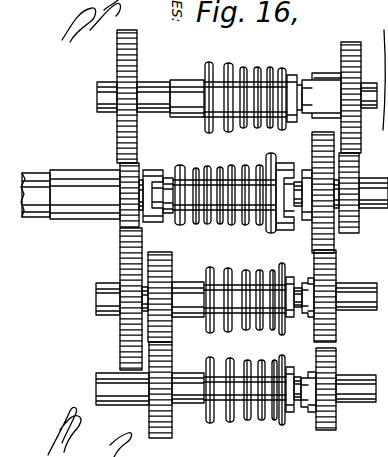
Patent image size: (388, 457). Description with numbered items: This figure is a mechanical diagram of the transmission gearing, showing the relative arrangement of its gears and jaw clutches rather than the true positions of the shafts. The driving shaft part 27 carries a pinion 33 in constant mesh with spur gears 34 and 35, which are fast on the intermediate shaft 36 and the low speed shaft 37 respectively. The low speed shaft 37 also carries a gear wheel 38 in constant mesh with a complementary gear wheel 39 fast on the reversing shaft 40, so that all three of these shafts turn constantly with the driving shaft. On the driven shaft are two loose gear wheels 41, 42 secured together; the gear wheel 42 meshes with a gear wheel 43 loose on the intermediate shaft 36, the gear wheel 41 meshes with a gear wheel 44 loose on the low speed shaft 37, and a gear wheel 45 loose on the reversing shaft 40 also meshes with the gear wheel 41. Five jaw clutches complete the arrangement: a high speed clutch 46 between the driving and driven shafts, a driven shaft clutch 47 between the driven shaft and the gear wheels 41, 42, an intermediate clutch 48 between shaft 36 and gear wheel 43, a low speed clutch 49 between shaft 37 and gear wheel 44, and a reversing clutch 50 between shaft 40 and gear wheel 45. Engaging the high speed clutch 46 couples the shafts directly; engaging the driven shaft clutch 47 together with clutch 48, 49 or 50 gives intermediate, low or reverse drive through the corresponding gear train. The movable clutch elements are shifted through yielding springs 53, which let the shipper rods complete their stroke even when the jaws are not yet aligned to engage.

The driving shaft part 27 is at (204, 185).
The pinion 33 is at (121, 220).
The spur gear 34 is at (117, 47).
The spur gear 35 is at (120, 330).
The intermediate shaft 36 is at (148, 88).
The low speed shaft 37 is at (100, 298).
The gear wheel 38 is at (166, 255).
The complementary gear wheel 39 is at (171, 436).
The reversing shaft 40 is at (108, 406).
The gear wheel 41 is at (331, 242).
The gear wheel 42 is at (353, 216).
The gear wheel 43 is at (351, 42).
The gear wheel 44 is at (338, 328).
The gear wheel 45 is at (337, 424).
The high speed clutch 46 is at (164, 184).
The driven shaft clutch 47 is at (293, 187).
The intermediate clutch 48 is at (318, 85).
The low speed clutch 49 is at (303, 286).
The reversing clutch 50 is at (306, 382).
The yielding springs 53 is at (244, 128).